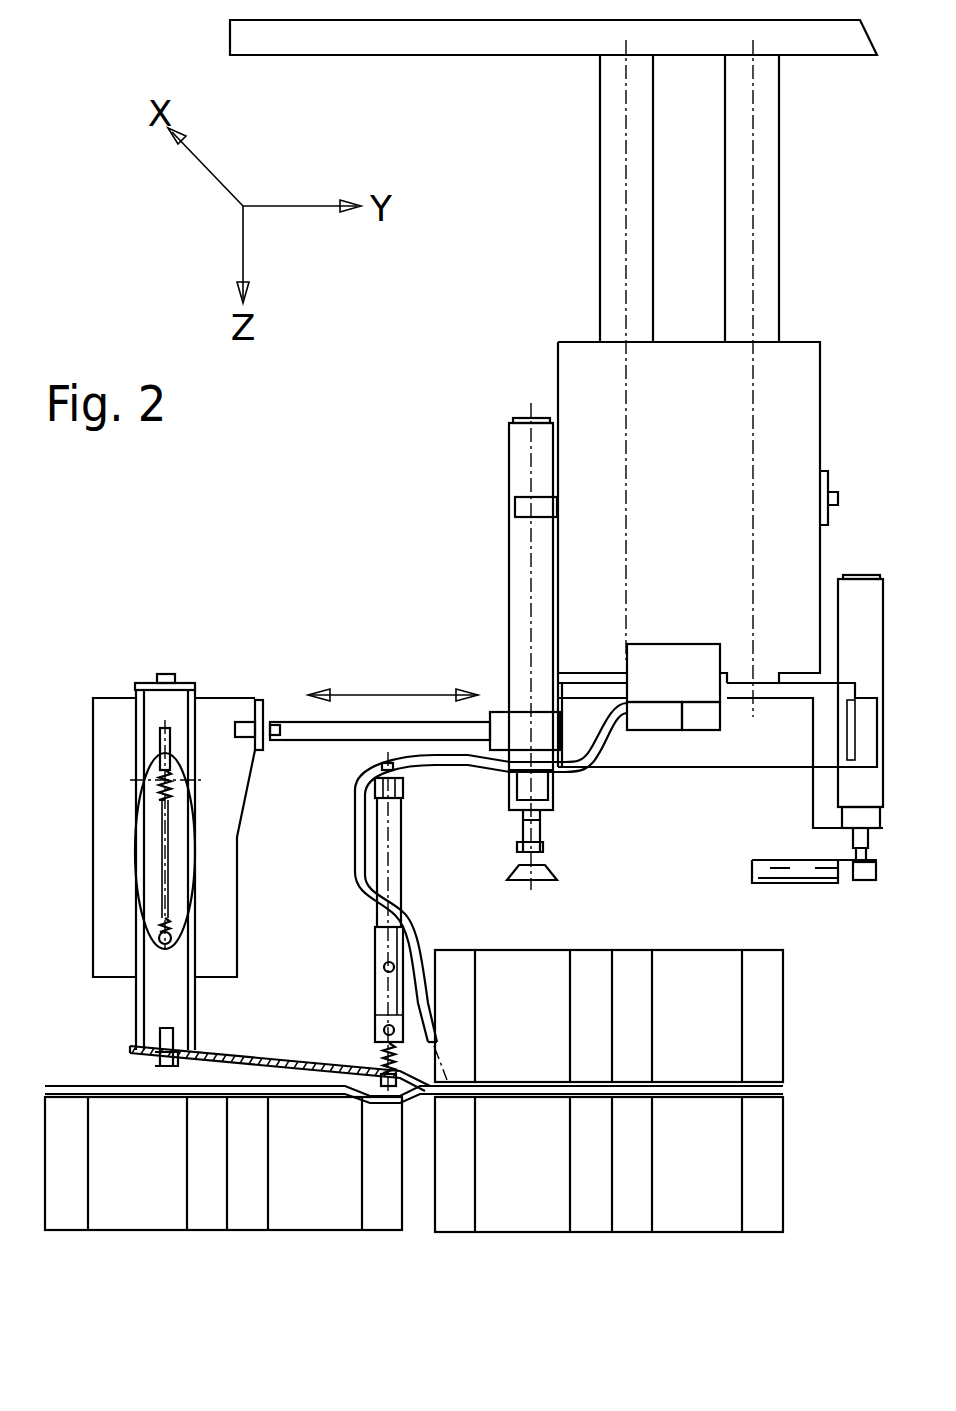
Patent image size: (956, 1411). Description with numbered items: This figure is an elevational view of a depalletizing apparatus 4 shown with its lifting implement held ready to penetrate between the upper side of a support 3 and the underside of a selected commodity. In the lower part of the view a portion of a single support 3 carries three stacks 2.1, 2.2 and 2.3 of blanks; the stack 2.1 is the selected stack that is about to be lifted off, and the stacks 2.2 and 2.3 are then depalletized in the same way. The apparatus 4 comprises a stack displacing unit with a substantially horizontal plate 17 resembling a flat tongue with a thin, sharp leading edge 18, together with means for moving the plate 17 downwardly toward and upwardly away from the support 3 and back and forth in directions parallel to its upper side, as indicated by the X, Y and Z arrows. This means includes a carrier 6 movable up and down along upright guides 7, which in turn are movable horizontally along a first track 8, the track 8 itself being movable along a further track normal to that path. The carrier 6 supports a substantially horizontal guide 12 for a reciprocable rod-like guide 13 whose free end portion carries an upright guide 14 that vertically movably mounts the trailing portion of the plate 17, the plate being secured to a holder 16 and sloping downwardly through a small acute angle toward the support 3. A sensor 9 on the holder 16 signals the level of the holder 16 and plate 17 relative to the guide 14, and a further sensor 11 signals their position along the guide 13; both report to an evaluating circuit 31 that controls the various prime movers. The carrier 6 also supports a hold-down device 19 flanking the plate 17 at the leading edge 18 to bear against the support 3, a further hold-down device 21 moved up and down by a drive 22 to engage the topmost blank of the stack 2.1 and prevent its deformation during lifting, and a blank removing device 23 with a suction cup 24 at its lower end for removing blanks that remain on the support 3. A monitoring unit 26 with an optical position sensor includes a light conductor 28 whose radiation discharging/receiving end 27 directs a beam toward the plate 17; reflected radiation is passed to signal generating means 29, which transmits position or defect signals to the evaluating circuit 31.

The selected stack 2.1 is at (765, 1000).
The stack 2.2 is at (127, 1212).
The stack 2.3 is at (597, 1215).
The support 3 is at (50, 1085).
The apparatus 4 is at (240, 552).
The carrier 6 is at (785, 405).
The upright guides 7 is at (742, 232).
The first track 8 is at (562, 38).
The sensor 9 is at (135, 682).
The further sensor 11 is at (667, 673).
The horizontal guide 12 is at (770, 735).
The rod-like guides 13 is at (302, 725).
The upright guide 14 is at (113, 837).
The holder 16 is at (152, 1013).
The plate 17 is at (265, 1068).
The leading edge 18 is at (413, 1093).
The hold-down device 19 is at (386, 1050).
The further hold-down device 21 is at (768, 873).
The drive 22 is at (853, 594).
The blank removing device 23 is at (474, 554).
The suction cup 24 is at (525, 875).
The monitoring unit 26 is at (425, 928).
The radiation discharging/receiving end 27 is at (418, 1000).
The light conductor 28 is at (363, 832).
The signal generating means 29 is at (650, 720).
The evaluating circuit 31 is at (706, 720).